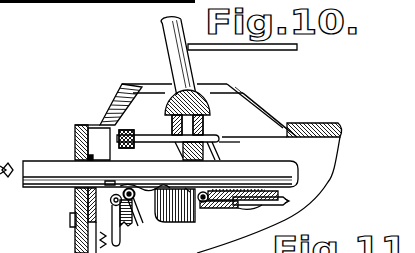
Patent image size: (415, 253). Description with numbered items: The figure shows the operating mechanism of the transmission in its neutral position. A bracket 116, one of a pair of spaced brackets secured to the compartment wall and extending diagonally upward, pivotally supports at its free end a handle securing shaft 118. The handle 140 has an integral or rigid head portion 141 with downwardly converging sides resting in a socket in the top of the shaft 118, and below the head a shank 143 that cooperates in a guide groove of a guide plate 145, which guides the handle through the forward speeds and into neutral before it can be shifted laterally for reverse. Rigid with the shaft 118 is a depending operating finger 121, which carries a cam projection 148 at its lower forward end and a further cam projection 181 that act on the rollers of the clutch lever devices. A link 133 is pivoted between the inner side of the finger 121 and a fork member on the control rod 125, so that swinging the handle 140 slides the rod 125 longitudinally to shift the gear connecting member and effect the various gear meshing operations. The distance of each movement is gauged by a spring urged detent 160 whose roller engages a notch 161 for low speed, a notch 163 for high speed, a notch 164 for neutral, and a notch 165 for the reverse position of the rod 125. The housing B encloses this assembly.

The housing B is at (267, 101).
The handle 140 is at (166, 56).
The head portion 141 is at (143, 125).
The handle securing shaft 118 is at (212, 113).
The bracket 116 is at (173, 144).
The guide plate 145 is at (220, 133).
The shank 143 is at (214, 152).
The control rod 125 is at (298, 173).
The notch 165 is at (118, 180).
The notch 164 is at (130, 188).
The notch 163 is at (157, 189).
The notch 161 is at (176, 171).
The spring urged detent 160 is at (126, 214).
The cam projection 181 is at (178, 223).
The operating finger 121 is at (205, 203).
The cam projection 148 is at (240, 206).
The link 133 is at (289, 201).